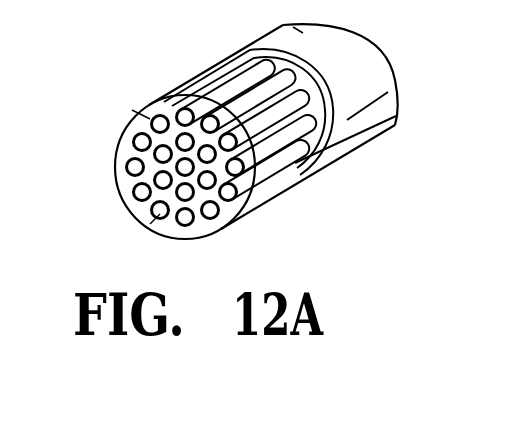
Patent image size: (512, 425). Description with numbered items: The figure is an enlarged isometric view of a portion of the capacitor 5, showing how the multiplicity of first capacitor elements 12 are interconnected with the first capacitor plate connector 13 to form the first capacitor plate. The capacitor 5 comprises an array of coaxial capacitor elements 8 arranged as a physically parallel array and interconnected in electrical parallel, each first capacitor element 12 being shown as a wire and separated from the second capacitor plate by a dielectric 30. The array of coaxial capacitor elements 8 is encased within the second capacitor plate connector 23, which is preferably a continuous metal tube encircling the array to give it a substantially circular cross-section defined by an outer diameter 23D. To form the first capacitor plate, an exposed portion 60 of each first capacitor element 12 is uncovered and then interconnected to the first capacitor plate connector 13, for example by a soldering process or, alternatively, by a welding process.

The capacitor 5 is at (350, 60).
The second capacitor plate connector 23 is at (320, 130).
The outer diameter 23D is at (395, 124).
The first capacitor plate connector 13 is at (130, 132).
The exposed portion 60 is at (132, 110).
The dielectric 30 is at (150, 224).
The coaxial capacitor element 8 is at (275, 117).
The first capacitor element 12 is at (275, 131).